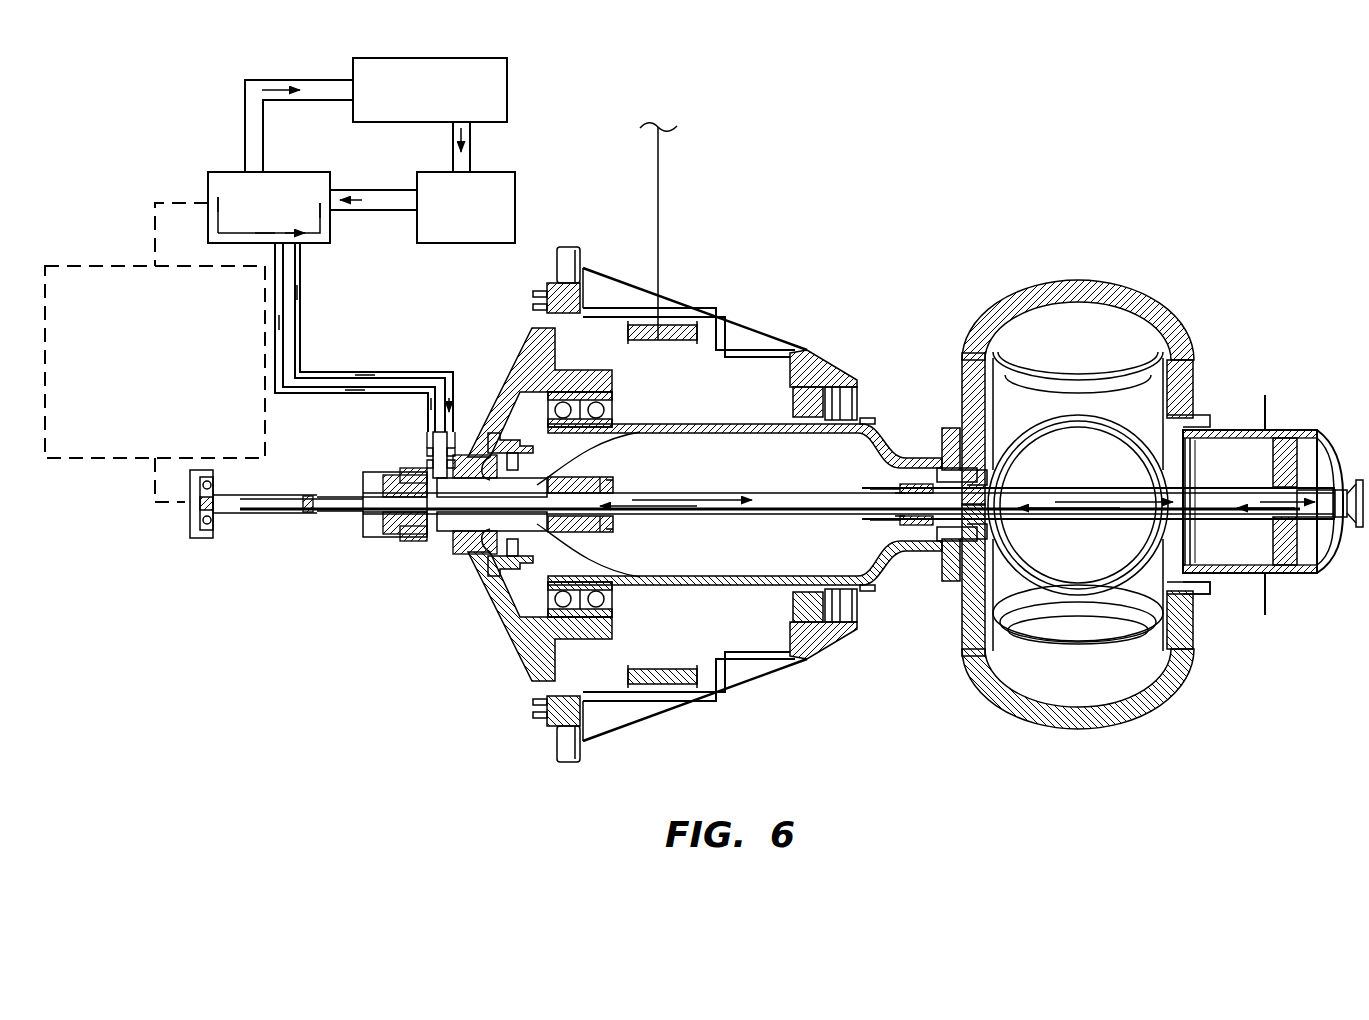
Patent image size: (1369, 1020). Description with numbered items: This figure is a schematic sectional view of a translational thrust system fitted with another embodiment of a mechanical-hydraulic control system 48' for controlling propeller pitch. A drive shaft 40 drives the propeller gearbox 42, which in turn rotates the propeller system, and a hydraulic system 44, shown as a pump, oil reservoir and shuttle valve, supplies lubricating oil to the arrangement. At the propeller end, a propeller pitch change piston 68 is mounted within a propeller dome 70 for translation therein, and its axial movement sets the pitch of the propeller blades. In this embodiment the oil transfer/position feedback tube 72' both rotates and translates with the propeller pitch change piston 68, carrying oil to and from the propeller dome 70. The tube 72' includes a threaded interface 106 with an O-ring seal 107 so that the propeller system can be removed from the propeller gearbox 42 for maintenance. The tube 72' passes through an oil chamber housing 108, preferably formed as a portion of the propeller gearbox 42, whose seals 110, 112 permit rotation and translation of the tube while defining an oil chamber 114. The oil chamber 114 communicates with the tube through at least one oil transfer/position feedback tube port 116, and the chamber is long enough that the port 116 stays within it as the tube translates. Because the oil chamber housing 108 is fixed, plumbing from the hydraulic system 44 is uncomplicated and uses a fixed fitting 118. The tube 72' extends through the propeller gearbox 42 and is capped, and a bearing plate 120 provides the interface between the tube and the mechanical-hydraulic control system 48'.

The drive shaft 40 is at (660, 190).
The propeller gearbox 42 is at (832, 375).
The hydraulic system 44 is at (147, 147).
The mechanical-hydraulic control system 48' is at (309, 708).
The propeller pitch change piston 68 is at (1306, 455).
The propeller dome 70 is at (1250, 432).
The oil transfer/position feedback tube 72' is at (1203, 477).
The threaded interface 106 is at (917, 535).
The O-ring seal 107 is at (927, 510).
The oil chamber housing 108 is at (580, 478).
The seal 110 is at (612, 518).
The seal 112 is at (405, 470).
The oil chamber 114 is at (535, 483).
The oil transfer/position feedback tube port 116 is at (440, 527).
The fixed fitting 118 is at (452, 432).
The bearing plate 120 is at (297, 535).